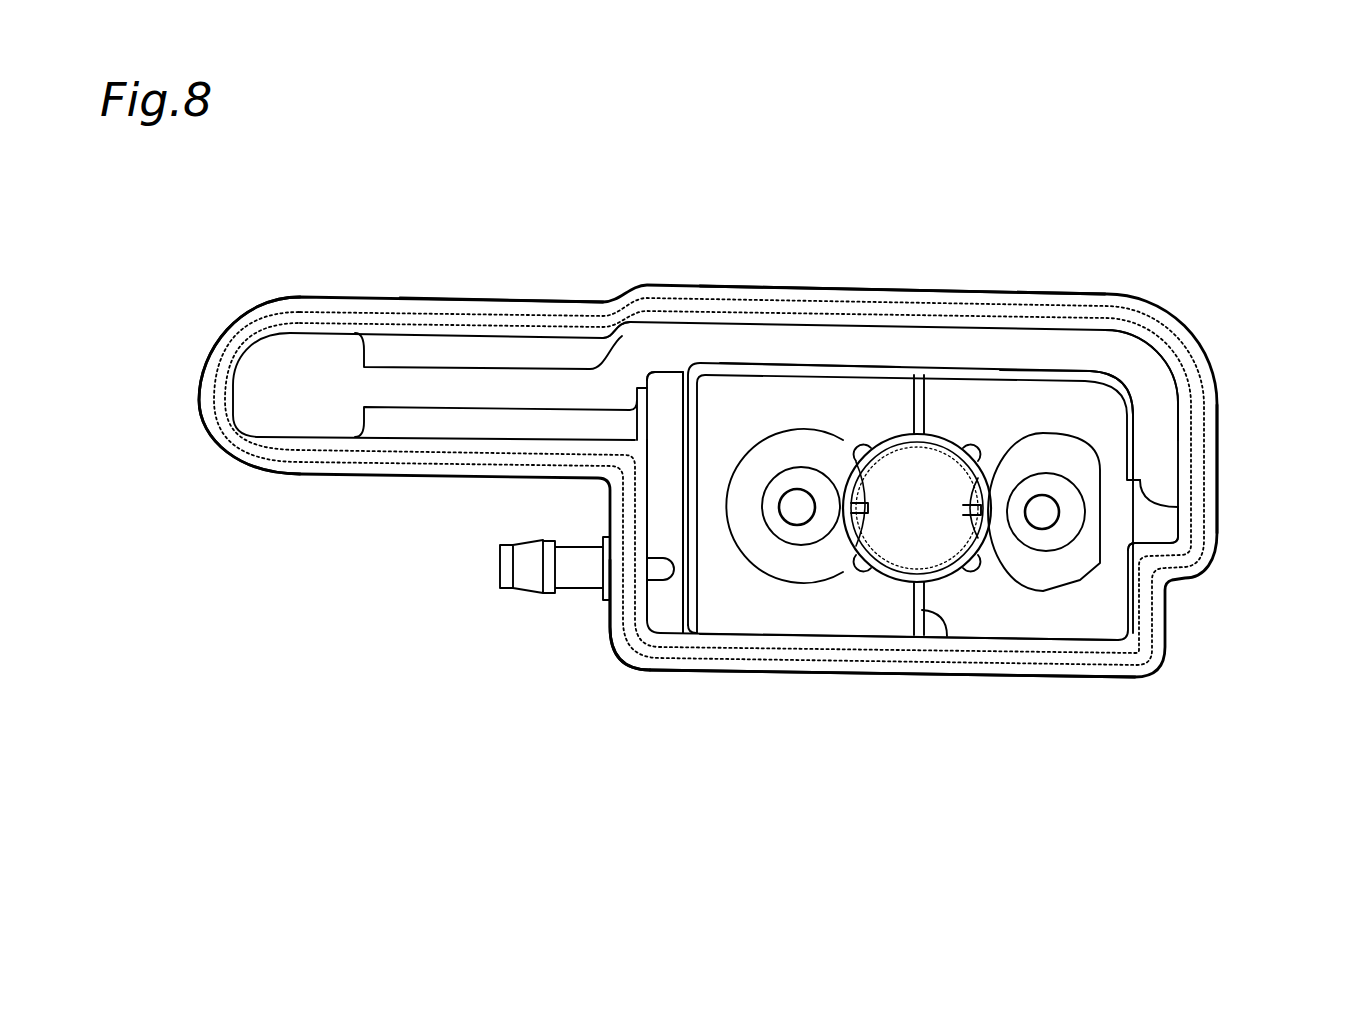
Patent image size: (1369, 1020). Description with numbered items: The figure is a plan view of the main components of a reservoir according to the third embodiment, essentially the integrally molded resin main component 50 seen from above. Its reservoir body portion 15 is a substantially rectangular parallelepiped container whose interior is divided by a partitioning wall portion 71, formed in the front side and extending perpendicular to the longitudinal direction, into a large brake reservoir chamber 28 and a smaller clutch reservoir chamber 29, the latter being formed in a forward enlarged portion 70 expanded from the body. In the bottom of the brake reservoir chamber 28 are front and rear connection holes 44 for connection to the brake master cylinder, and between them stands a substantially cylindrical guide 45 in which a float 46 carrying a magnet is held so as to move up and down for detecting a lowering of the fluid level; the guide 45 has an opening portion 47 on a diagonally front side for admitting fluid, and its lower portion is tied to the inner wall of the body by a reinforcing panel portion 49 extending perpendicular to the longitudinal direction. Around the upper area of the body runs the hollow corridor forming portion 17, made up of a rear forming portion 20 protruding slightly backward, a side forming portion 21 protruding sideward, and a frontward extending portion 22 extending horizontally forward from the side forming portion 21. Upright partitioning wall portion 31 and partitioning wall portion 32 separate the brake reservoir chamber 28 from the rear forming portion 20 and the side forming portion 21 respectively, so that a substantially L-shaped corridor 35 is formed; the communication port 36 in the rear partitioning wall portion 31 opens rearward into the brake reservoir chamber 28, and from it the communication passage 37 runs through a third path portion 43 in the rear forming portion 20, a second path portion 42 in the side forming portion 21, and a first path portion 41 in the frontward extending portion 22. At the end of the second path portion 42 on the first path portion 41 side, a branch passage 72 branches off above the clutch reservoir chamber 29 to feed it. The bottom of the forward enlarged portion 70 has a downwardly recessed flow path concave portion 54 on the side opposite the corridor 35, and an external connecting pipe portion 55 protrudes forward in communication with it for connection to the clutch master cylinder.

The reservoir body portion 15 is at (860, 677).
The corridor forming portion 17 is at (567, 298).
The rear forming portion 20 is at (1218, 470).
The side forming portion 21 is at (930, 290).
The frontward extending portion 22 is at (420, 297).
The brake reservoir chamber 28 is at (777, 617).
The clutch reservoir chamber 29 is at (660, 493).
The partitioning wall portion 31 is at (1143, 445).
The partitioning wall portion 32 is at (1057, 368).
The corridor 35 is at (838, 354).
The communication port 36 is at (1140, 503).
The communication passage 37 is at (633, 363).
The first path portion 41 is at (483, 383).
The second path portion 42 is at (780, 350).
The third path portion 43 is at (1167, 422).
The connection holes 44 is at (800, 515).
The guide 45 is at (970, 565).
The float 46 is at (868, 568).
The opening portion 47 is at (872, 443).
The reinforcing panel portion 49 is at (925, 403).
The main component 50 is at (1233, 330).
The flow path concave portion 54 is at (660, 580).
The external connecting pipe portion 55 is at (528, 583).
The forward enlarged portion 70 is at (607, 615).
The partitioning wall portion 71 is at (683, 513).
The branch passage 72 is at (665, 440).